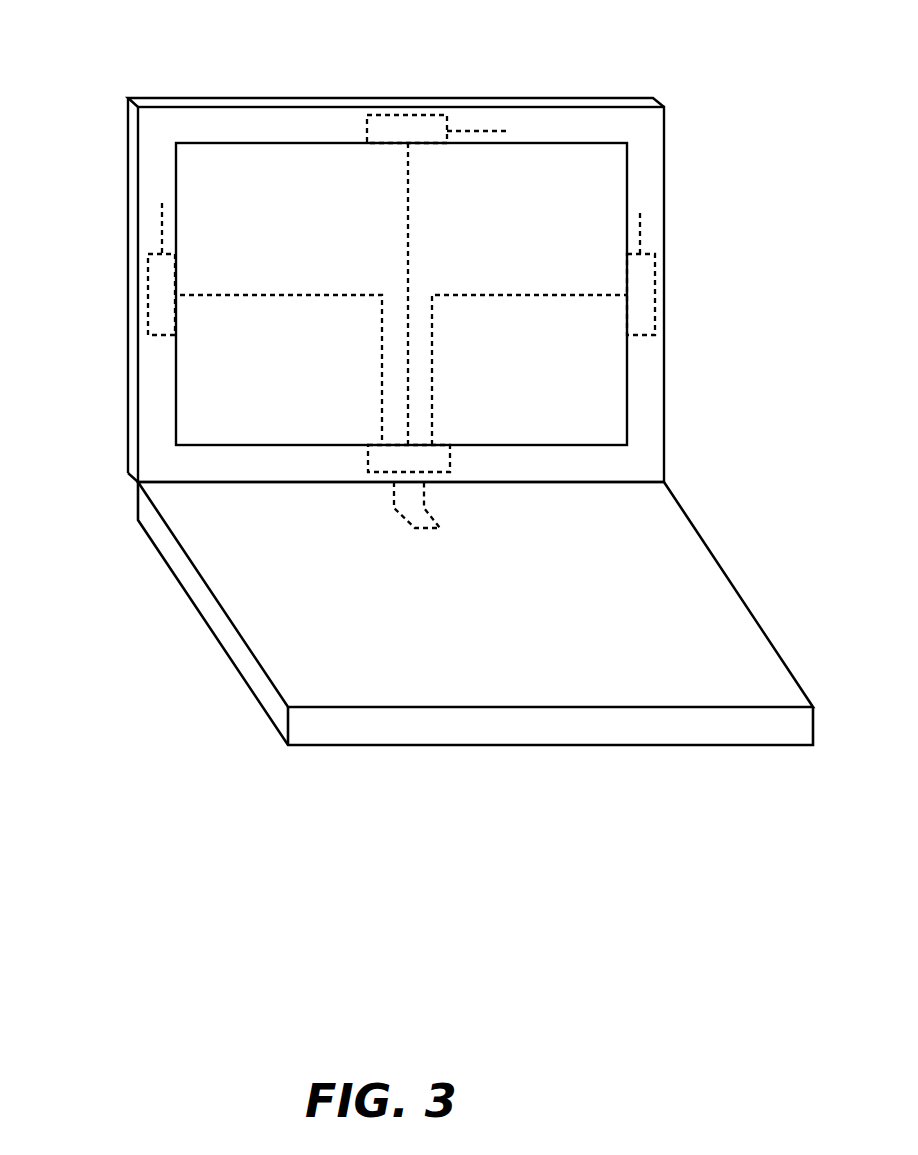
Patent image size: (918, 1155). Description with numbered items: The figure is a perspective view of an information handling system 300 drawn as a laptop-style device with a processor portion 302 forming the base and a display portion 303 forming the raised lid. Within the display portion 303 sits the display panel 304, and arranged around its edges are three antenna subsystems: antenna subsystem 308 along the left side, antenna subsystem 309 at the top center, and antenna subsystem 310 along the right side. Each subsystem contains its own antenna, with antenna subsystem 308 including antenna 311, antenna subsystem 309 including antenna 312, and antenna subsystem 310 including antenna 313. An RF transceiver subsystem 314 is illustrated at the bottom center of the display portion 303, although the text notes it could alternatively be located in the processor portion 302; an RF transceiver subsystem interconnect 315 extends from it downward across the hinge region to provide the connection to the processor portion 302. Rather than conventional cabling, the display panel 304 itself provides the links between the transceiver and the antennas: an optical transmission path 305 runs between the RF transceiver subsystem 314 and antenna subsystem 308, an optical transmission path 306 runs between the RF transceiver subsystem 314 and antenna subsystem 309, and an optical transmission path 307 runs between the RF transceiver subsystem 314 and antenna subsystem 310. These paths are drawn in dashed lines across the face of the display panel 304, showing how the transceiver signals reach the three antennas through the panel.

The information handling system 300 is at (156, 71).
The processor portion 302 is at (188, 582).
The display portion 303 is at (197, 104).
The display panel 304 is at (258, 158).
The optical transmission path 305 is at (300, 295).
The optical transmission path 306 is at (408, 240).
The optical transmission path 307 is at (497, 295).
The antenna subsystem 308 is at (148, 297).
The antenna subsystem 309 is at (385, 150).
The antenna subsystem 310 is at (627, 315).
The antenna 311 is at (162, 226).
The antenna 312 is at (483, 133).
The antenna 313 is at (640, 233).
The RF transceiver subsystem 314 is at (368, 456).
The RF transceiver subsystem interconnect 315 is at (400, 515).